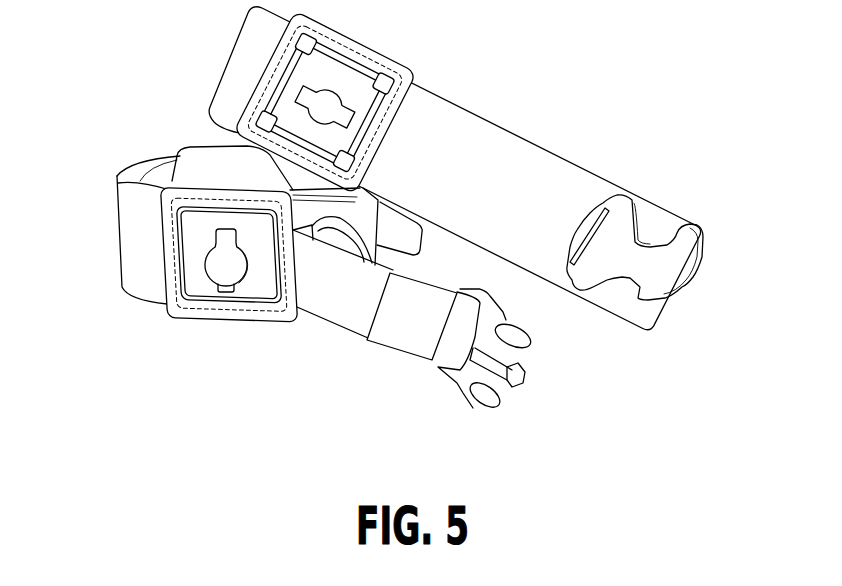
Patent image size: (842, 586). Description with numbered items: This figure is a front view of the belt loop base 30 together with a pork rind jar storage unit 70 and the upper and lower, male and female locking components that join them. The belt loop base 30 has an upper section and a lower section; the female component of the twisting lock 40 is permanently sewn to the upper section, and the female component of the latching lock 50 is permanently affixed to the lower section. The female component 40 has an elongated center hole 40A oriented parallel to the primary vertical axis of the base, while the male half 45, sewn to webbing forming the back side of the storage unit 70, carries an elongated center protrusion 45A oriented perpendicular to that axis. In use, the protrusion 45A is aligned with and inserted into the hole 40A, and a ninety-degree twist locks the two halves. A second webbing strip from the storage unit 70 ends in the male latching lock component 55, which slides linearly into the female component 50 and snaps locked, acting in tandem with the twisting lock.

The belt loop base 30 is at (577, 158).
The twisting lock, female component 40 is at (386, 97).
The center hole in twisting lock, female component 40A is at (327, 83).
The twisting lock, male half 45 is at (251, 301).
The protrusion in twisting lock, male component 45A is at (222, 263).
The latching lock, female component 50 is at (678, 231).
The latching lock, male component 55 is at (523, 380).
The pork rind jar storage unit 70 is at (117, 177).